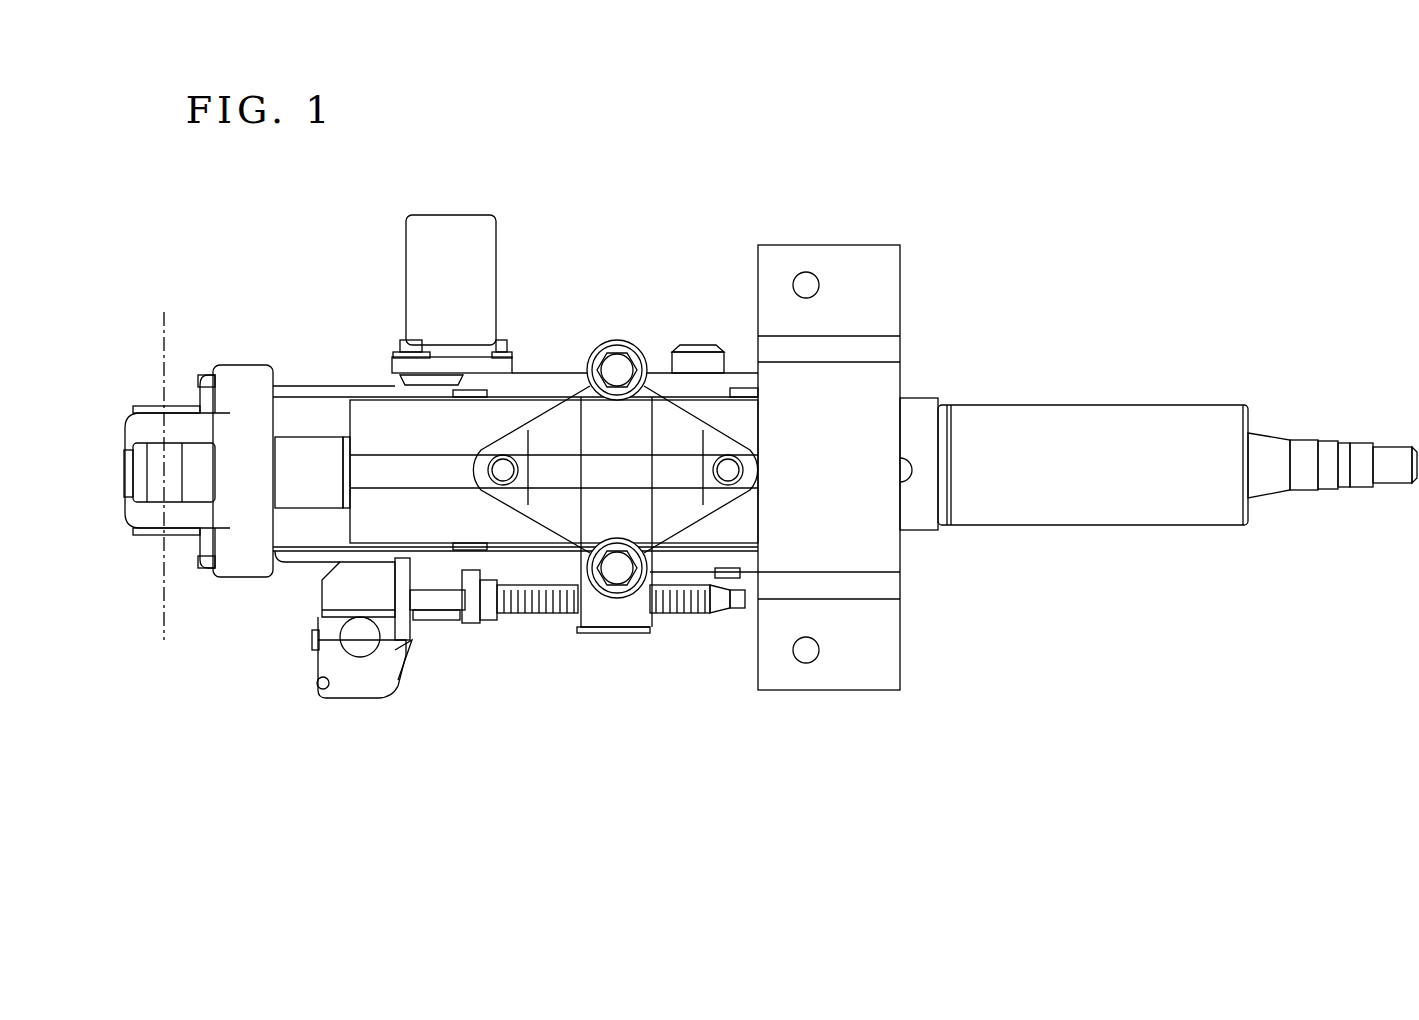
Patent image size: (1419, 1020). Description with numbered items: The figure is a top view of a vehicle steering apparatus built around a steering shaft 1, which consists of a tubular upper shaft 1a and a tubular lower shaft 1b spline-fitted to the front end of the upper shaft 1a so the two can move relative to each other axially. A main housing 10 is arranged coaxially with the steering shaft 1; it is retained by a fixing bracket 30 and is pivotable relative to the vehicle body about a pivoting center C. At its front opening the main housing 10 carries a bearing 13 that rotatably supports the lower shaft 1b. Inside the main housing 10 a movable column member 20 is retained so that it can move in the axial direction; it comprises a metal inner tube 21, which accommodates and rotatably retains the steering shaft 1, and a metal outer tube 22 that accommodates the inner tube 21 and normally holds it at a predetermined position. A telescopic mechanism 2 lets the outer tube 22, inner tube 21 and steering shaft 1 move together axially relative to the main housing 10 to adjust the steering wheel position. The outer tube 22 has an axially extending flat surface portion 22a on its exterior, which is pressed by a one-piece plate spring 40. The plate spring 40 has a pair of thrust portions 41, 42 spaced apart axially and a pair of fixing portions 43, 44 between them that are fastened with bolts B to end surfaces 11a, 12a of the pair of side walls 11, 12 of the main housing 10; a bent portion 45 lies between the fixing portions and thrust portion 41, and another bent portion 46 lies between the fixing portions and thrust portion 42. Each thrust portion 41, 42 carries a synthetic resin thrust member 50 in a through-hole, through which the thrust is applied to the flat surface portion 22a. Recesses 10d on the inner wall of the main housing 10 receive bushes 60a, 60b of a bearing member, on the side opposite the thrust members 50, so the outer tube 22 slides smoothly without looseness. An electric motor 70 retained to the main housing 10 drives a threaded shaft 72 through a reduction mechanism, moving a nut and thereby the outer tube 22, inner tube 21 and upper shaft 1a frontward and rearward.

The steering shaft 1 is at (1301, 398).
The upper shaft 1a is at (1306, 486).
The lower shaft 1b is at (125, 488).
The telescopic mechanism 2 is at (566, 632).
The main housing 10 is at (550, 362).
The recesses 10d is at (457, 393).
The side wall 11 is at (318, 383).
The end surface 11a is at (563, 385).
The side wall 12 is at (313, 553).
The end surface 12a is at (537, 614).
The bearing 13 is at (228, 572).
The movable column member 20 is at (1115, 386).
The inner tube 21 is at (1120, 512).
The outer tube 22 is at (352, 410).
The flat surface portion 22a is at (387, 470).
The fixing bracket 30 is at (895, 651).
The plate spring 40 is at (666, 358).
The thrust portion 41 is at (742, 495).
The thrust portion 42 is at (493, 490).
The fixing portion 43 is at (632, 412).
The fixing portion 44 is at (600, 612).
The bent portion 45 is at (652, 500).
The bent portion 46 is at (507, 612).
The thrust member 50 is at (505, 466).
The bush 60a is at (760, 545).
The bush 60b is at (462, 556).
The electric motor 70 is at (330, 665).
The threaded shaft 72 is at (693, 620).
The bolts B is at (617, 362).
The pivoting center C is at (164, 462).